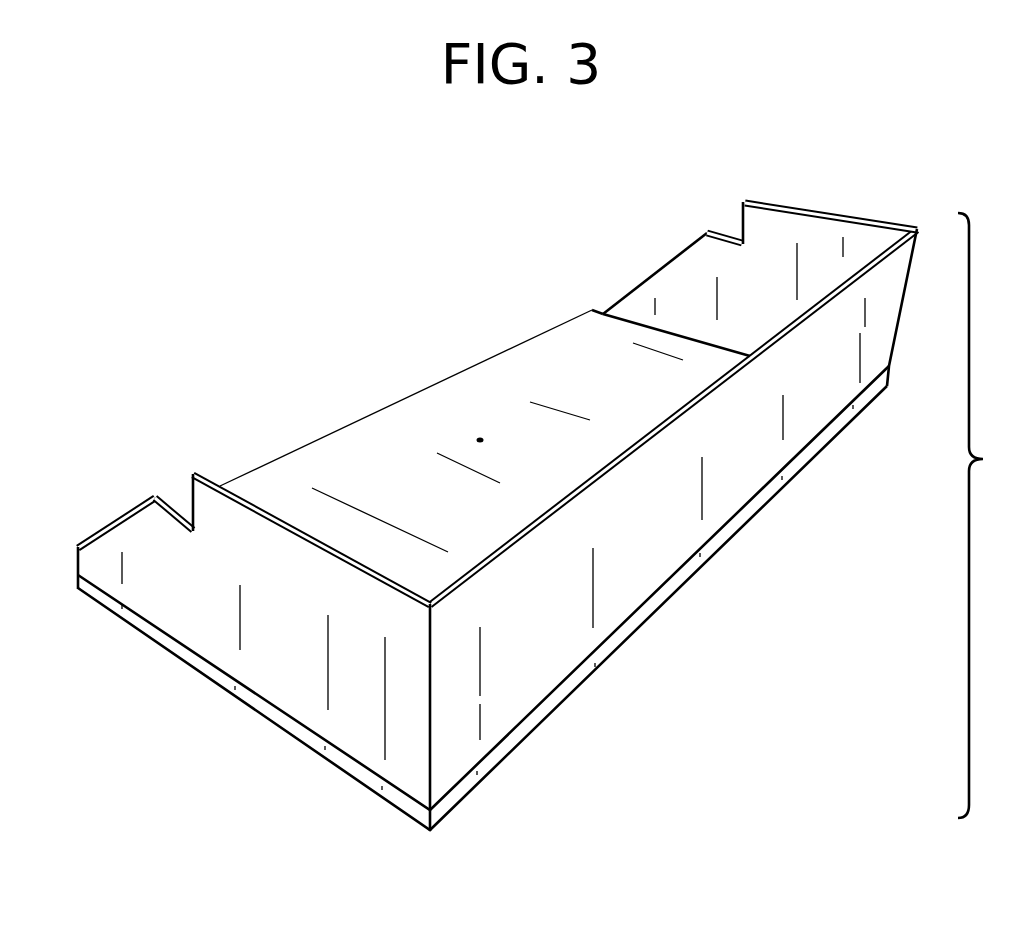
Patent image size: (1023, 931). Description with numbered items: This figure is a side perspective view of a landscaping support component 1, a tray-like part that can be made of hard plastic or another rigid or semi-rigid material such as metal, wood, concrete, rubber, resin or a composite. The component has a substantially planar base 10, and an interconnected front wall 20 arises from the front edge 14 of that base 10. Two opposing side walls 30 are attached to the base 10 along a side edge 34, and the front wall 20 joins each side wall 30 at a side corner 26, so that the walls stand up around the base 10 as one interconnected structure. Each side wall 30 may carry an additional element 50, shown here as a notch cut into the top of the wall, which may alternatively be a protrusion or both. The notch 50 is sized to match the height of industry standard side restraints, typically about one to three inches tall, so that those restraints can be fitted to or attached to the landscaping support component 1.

The landscaping support component 1 is at (983, 515).
The substantially planar base 10 is at (385, 445).
The front edge 14 is at (600, 668).
The front wall 20 is at (736, 470).
The side corner 26 is at (903, 302).
The side wall 30 is at (820, 242).
The side edge 34 is at (602, 305).
The additional element (notch) 50 is at (733, 227).